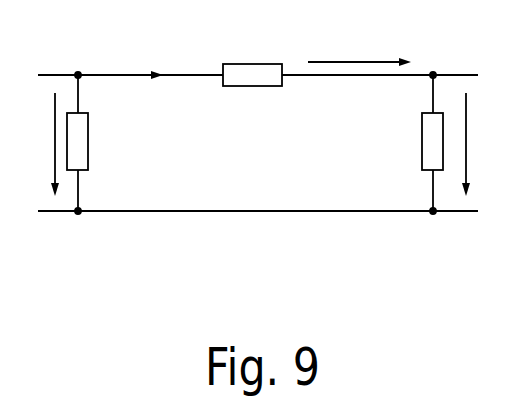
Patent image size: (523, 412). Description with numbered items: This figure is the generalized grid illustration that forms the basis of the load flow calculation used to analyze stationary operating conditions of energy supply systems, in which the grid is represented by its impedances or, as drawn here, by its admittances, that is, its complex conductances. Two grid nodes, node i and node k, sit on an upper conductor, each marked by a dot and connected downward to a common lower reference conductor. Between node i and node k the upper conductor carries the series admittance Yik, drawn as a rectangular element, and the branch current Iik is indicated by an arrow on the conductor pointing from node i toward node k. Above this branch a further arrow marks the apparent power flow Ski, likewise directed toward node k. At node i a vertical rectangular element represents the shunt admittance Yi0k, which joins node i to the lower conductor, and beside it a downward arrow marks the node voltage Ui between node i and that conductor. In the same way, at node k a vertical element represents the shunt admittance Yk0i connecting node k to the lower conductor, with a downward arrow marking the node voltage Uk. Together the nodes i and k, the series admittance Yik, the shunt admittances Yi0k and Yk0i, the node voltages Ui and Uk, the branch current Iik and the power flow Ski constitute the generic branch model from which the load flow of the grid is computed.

The node i is at (77, 54).
The node k is at (433, 54).
The branch current Iik is at (153, 57).
The series admittance Yik is at (253, 53).
The apparent power flow Ski is at (345, 45).
The node voltage at node i Ui is at (40, 152).
The shunt admittance at node i Yi0k is at (115, 152).
The shunt admittance at node k Yk0i is at (367, 152).
The node voltage at node k Uk is at (497, 152).